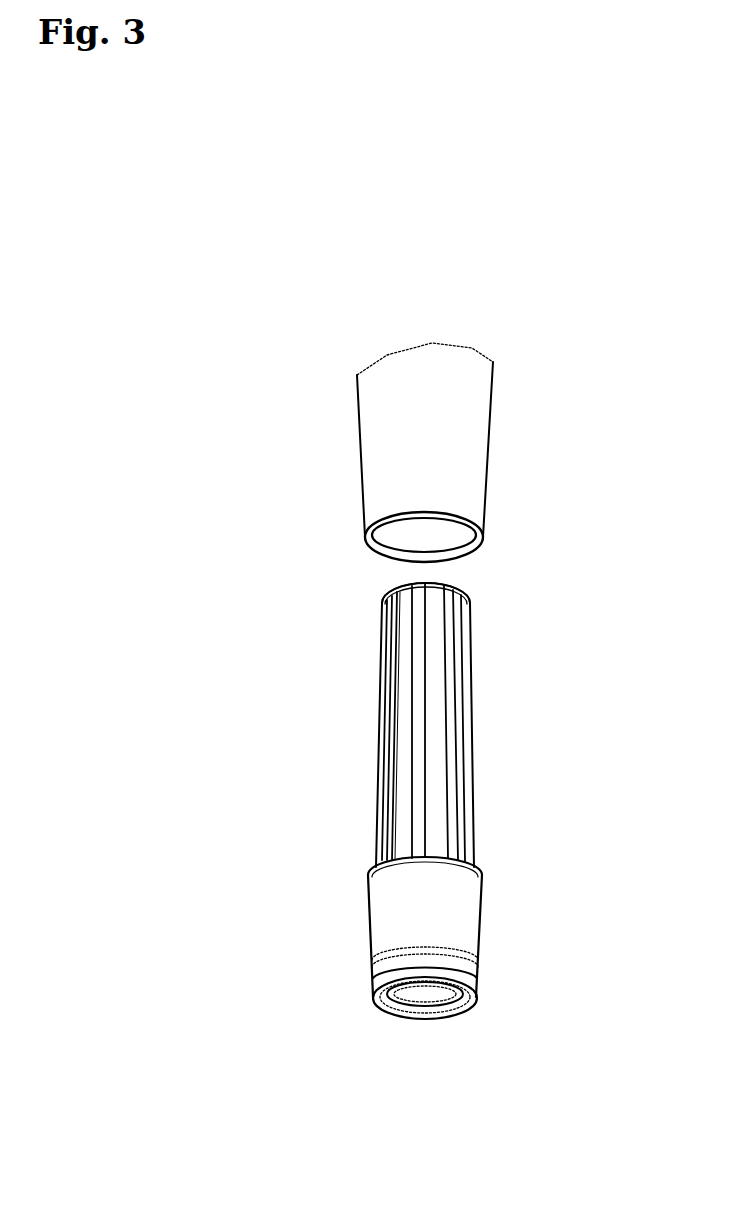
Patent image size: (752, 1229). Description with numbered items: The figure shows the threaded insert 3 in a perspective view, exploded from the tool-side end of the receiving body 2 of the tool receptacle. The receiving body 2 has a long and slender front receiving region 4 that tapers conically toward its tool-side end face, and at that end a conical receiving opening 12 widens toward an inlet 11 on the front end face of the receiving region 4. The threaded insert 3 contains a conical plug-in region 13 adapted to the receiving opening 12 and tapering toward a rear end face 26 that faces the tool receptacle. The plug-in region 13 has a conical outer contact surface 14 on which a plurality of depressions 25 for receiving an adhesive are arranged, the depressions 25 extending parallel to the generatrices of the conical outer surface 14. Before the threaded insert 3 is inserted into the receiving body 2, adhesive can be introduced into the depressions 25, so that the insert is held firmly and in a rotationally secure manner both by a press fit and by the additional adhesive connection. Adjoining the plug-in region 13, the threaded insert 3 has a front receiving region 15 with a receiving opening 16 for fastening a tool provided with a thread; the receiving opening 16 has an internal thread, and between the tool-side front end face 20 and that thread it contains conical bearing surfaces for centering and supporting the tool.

The receiving body 2 is at (457, 452).
The threaded insert 3 is at (451, 857).
The front receiving region 4 is at (386, 445).
The inlet 11 is at (365, 537).
The receiving opening 12 is at (450, 537).
The plug-in region 13 is at (425, 704).
The outer contact surface 14 is at (403, 772).
The front receiving region 15 is at (387, 932).
The receiving opening 16 is at (439, 1043).
The tool-side front end face 20 is at (378, 993).
The depressions 25 is at (422, 677).
The rear end face 26 is at (391, 590).